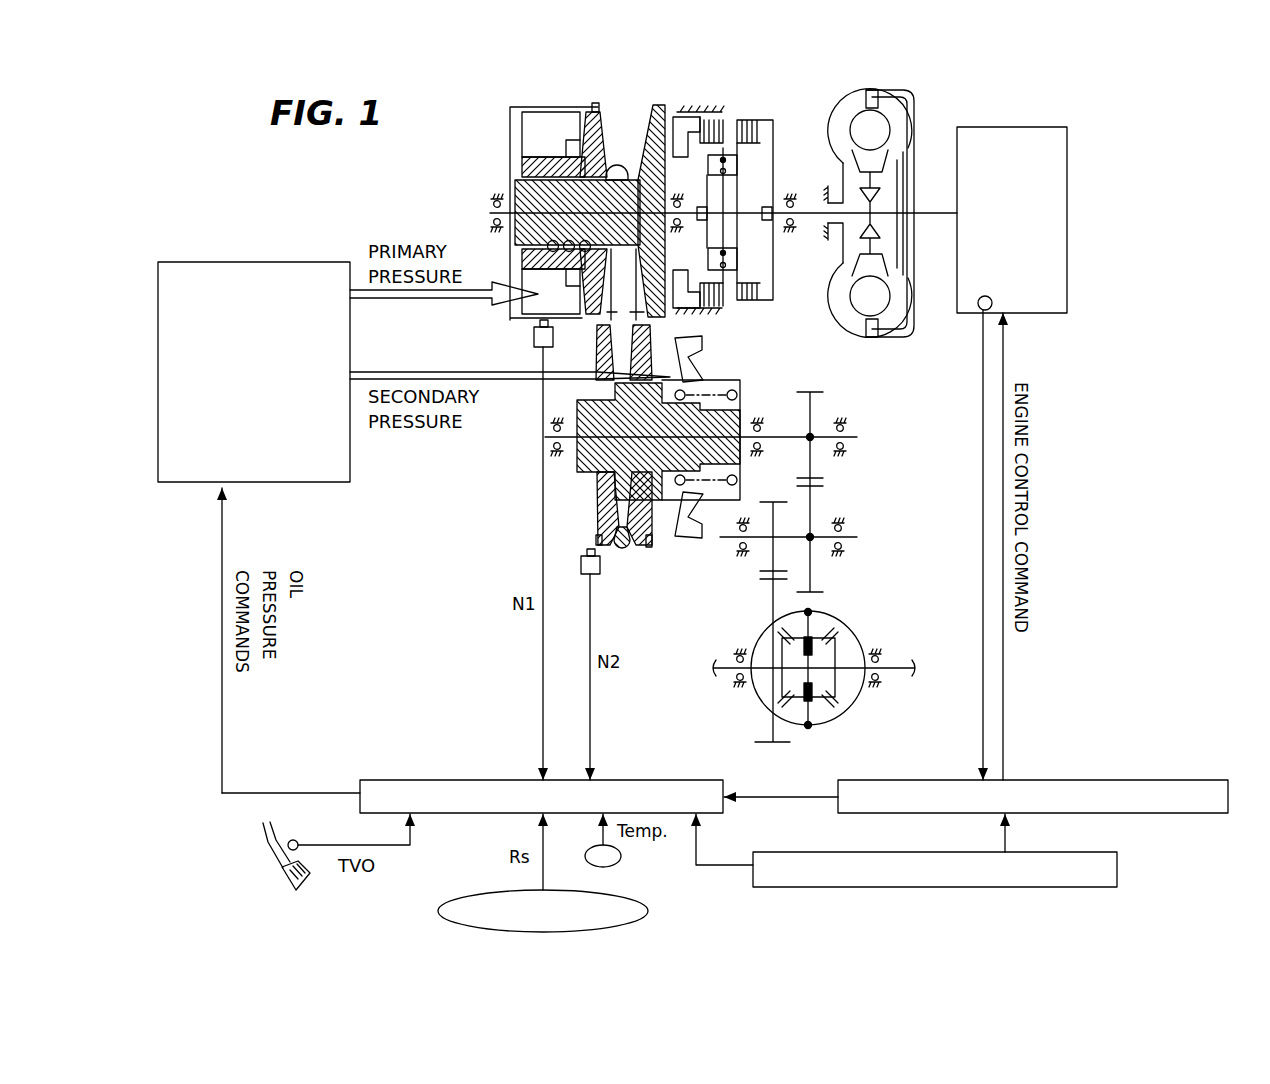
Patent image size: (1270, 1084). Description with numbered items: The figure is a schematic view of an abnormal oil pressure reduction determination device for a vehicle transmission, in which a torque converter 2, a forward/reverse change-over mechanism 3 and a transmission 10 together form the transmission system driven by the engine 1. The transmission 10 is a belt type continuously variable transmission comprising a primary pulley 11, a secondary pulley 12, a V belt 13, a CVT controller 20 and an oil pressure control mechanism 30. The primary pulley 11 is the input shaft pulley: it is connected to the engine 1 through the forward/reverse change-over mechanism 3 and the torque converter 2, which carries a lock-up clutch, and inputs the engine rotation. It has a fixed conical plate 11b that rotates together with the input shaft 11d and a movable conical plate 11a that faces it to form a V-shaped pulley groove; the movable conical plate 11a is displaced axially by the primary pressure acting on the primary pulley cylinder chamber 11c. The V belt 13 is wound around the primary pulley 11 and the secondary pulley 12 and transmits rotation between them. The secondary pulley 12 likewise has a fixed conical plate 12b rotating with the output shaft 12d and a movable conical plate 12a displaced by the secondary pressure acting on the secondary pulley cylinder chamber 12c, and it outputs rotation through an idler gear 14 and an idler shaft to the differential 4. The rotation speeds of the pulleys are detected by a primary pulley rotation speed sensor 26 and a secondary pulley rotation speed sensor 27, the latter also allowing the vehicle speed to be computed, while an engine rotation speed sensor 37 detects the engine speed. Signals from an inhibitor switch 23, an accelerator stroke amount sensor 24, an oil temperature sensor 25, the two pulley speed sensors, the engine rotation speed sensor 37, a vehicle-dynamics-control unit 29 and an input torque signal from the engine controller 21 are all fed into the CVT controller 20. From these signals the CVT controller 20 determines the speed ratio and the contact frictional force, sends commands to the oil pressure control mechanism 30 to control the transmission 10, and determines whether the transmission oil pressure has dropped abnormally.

The engine 1 is at (984, 127).
The torque converter 2 is at (871, 84).
The forward/reverse change-over mechanism 3 is at (704, 102).
The differential 4 is at (851, 617).
The transmission 10 is at (581, 100).
The primary pulley 11 is at (655, 101).
The movable conical plate 11a is at (598, 111).
The fixed conical plate 11b is at (667, 110).
The primary pulley cylinder chamber 11c is at (547, 118).
The input shaft 11d is at (795, 224).
The secondary pulley 12 is at (716, 373).
The movable conical plate 12a is at (641, 546).
The fixed conical plate 12b is at (598, 497).
The secondary pulley cylinder chamber 12c is at (665, 532).
The output shaft 12d is at (785, 432).
The V belt 13 is at (630, 319).
The idler gear 14 is at (775, 511).
The CVT controller 20 is at (541, 785).
The engine controller 21 is at (890, 780).
The inhibitor switch 23 is at (648, 915).
The accelerator stroke amount sensor 24 is at (294, 840).
The oil temperature sensor 25 is at (621, 857).
The primary pulley rotation speed sensor 26 is at (532, 338).
The secondary pulley rotation speed sensor 27 is at (581, 565).
The vehicle-dynamics-control (VDC) unit 29 is at (1117, 870).
The oil pressure control mechanism 30 is at (257, 262).
The engine rotation speed sensor 37 is at (982, 310).